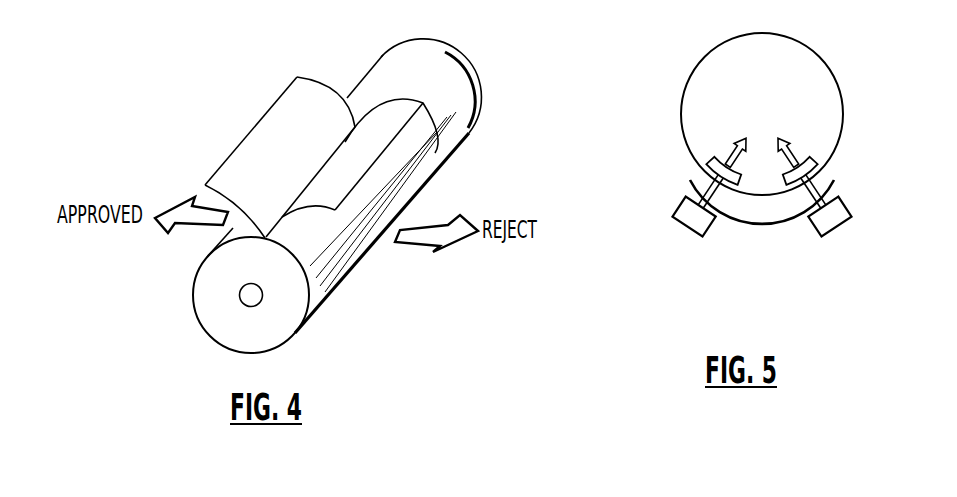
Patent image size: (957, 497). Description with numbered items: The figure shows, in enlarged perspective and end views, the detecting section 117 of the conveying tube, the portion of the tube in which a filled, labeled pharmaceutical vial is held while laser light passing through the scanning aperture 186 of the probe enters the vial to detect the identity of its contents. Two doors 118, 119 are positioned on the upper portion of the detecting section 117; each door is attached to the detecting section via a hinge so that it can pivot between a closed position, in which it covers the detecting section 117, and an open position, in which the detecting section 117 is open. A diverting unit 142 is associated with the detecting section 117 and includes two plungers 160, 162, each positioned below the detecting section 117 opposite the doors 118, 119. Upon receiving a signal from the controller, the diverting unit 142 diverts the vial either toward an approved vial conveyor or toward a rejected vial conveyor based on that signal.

In FIG. 4, the detecting section 117 is at (374, 297).
In FIG. 5, the detecting section 117 is at (767, 212).
In FIG. 4, the door 118 is at (238, 160).
In FIG. 4, the door 119 is at (385, 125).
In FIG. 4, the scanning aperture 186 is at (240, 297).
In FIG. 5, the diverting unit 142 is at (868, 110).
In FIG. 5, the plunger 160 is at (835, 218).
In FIG. 5, the plunger 162 is at (694, 222).